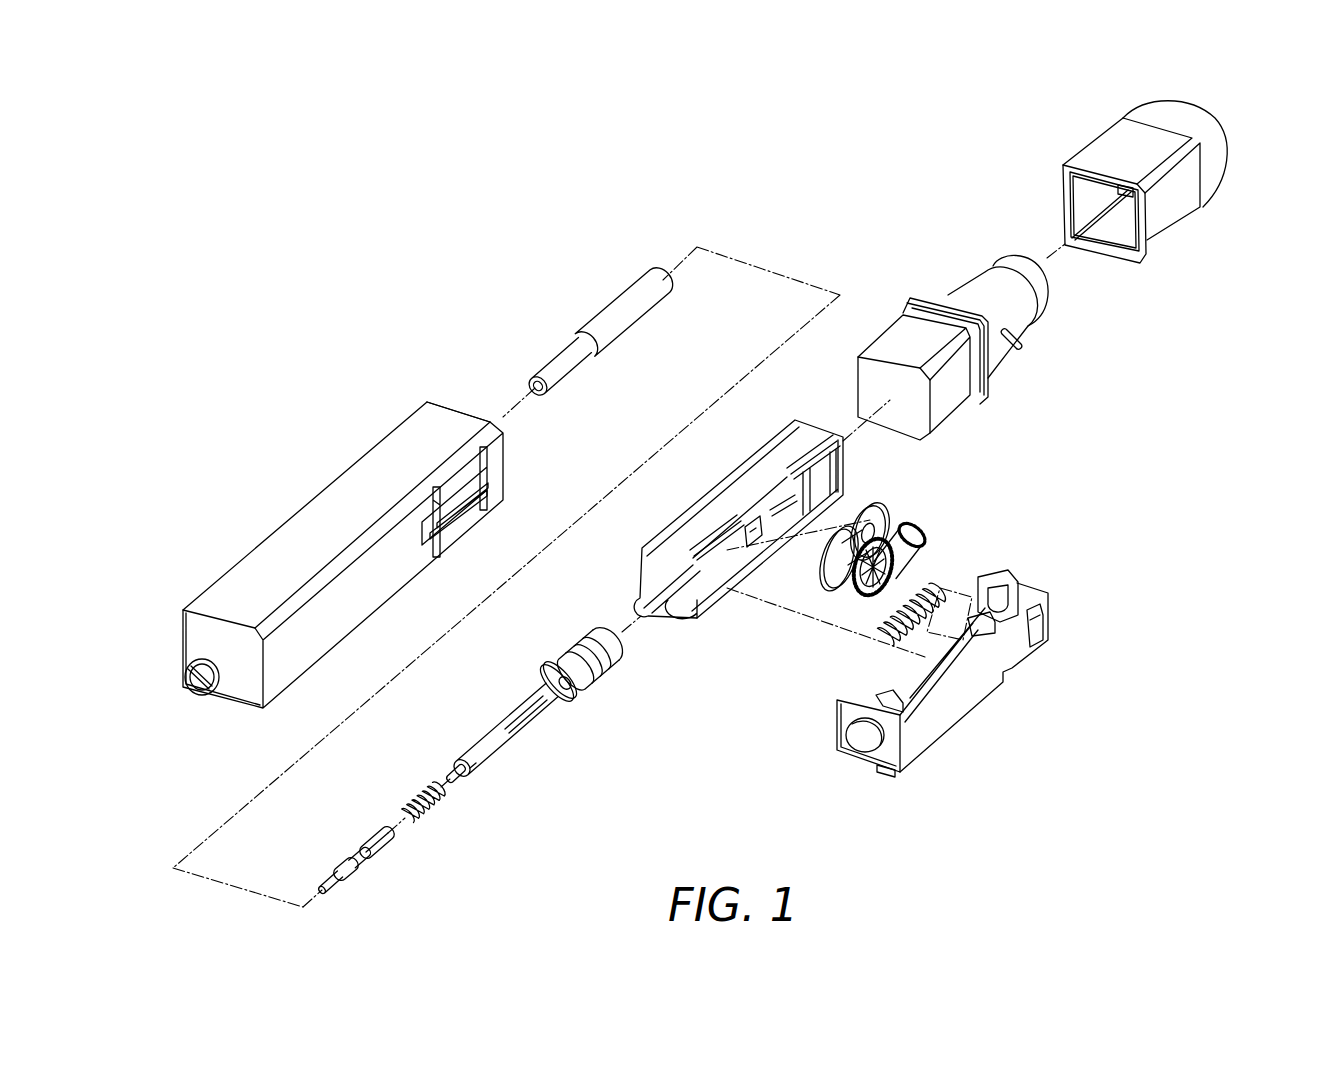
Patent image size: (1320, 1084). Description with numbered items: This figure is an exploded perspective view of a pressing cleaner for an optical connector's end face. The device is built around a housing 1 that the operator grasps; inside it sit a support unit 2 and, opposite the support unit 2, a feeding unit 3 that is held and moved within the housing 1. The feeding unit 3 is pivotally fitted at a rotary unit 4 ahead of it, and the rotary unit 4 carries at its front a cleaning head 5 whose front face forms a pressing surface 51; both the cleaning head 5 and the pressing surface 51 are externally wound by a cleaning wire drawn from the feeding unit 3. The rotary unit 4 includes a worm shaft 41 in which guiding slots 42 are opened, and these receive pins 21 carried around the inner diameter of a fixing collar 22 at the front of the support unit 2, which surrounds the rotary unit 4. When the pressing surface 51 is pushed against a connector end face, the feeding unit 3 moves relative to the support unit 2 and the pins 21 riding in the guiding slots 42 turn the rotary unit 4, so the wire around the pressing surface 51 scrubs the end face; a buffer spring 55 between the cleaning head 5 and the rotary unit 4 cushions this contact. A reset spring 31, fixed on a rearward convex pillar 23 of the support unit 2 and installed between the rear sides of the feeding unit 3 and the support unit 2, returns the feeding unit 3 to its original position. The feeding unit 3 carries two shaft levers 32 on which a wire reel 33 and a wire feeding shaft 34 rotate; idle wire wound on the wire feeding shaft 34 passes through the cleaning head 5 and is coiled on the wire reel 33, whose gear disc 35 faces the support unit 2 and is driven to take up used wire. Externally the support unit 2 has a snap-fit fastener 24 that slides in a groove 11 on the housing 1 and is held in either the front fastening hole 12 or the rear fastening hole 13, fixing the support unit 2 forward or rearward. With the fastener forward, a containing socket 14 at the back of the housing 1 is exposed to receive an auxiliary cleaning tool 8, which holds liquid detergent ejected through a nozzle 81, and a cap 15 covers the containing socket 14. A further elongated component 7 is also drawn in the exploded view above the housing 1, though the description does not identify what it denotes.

The housing 1 is at (313, 517).
The groove 11 is at (455, 505).
The fastening hole 12 is at (433, 530).
The fastening hole 13 is at (490, 484).
The containing socket 14 is at (457, 410).
The cap 15 is at (1167, 223).
The support unit 2 is at (960, 712).
The pins 21 is at (843, 752).
The fixing collar 22 is at (835, 705).
The convex pillar 23 is at (988, 570).
The snap-fit fastener 24 is at (1045, 620).
The feeding unit 3 is at (665, 538).
The reset spring 31 is at (923, 583).
The shaft levers 32 is at (770, 558).
The wire reel 33 is at (887, 512).
The wire feeding shaft 34 is at (838, 590).
The gear disc 35 is at (918, 528).
The rotary unit 4 is at (493, 745).
The worm shaft 41 is at (560, 655).
The guiding slots 42 is at (620, 673).
The cleaning head 5 is at (347, 873).
The pressing surface 51 is at (320, 890).
The buffer spring 55 is at (427, 815).
The rod 7 is at (600, 302).
The auxiliary cleaning tool 8 is at (950, 402).
The nozzle 81 is at (1019, 346).